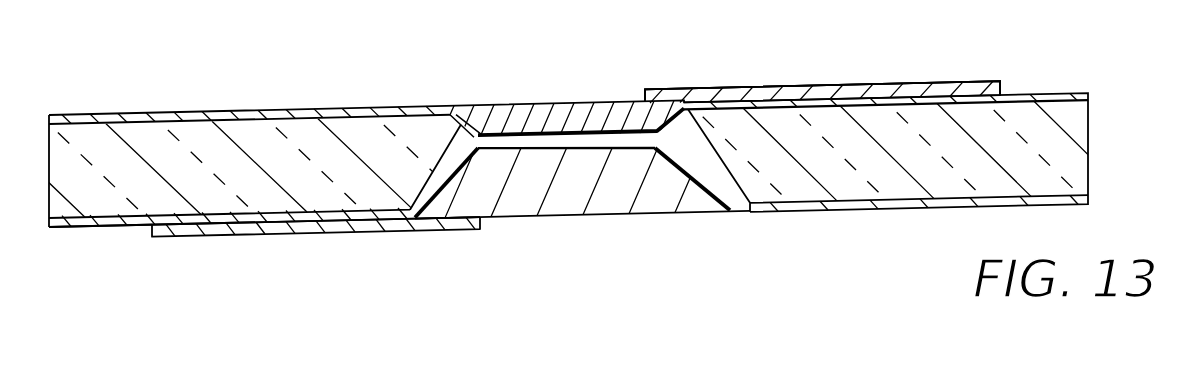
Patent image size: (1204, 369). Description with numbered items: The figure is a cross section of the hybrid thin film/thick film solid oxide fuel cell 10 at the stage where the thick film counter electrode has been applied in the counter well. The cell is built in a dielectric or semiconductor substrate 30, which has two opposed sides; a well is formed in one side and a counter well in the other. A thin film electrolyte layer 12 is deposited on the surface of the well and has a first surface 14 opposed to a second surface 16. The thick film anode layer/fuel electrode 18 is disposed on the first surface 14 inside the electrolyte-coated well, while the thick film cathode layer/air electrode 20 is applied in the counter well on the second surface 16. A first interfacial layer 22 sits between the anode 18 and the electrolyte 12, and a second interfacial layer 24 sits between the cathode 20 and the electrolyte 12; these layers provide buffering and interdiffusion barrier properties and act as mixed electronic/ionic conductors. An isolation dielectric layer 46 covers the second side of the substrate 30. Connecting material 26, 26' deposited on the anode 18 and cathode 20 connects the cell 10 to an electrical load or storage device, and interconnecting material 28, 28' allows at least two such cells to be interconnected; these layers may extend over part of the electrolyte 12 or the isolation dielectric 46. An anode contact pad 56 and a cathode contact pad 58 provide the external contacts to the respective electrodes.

The hybrid thin film/thick film solid oxide fuel cell 10 is at (1050, 70).
The thin film electrolyte layer 12 is at (841, 209).
The first surface 14 is at (561, 154).
The second surface 16 is at (521, 126).
The thick film anode layer/fuel electrode 18 is at (610, 202).
The thick film cathode layer/air electrode 20 is at (493, 109).
The first interfacial layer 22 is at (700, 187).
The second interfacial layer 24 is at (578, 132).
The connecting material 26 is at (264, 264).
The interconnecting material 28 is at (264, 270).
The connecting material 26' is at (805, 61).
The interconnecting material 28' is at (822, 61).
The substrate 30 is at (279, 198).
The isolation dielectric layer 46 is at (238, 111).
The anode contact pad 56 is at (188, 241).
The cathode contact pad 58 is at (768, 81).